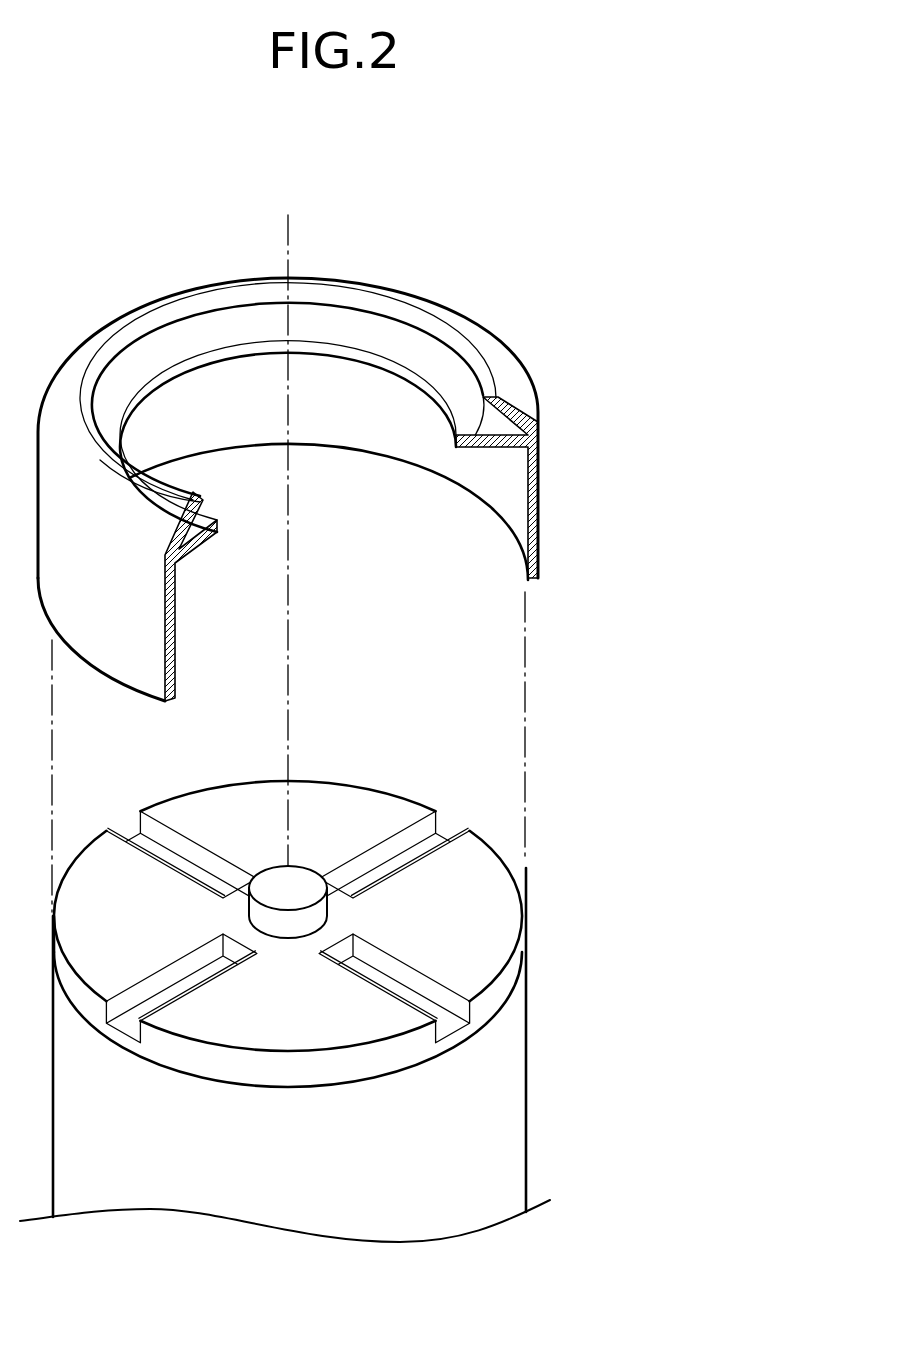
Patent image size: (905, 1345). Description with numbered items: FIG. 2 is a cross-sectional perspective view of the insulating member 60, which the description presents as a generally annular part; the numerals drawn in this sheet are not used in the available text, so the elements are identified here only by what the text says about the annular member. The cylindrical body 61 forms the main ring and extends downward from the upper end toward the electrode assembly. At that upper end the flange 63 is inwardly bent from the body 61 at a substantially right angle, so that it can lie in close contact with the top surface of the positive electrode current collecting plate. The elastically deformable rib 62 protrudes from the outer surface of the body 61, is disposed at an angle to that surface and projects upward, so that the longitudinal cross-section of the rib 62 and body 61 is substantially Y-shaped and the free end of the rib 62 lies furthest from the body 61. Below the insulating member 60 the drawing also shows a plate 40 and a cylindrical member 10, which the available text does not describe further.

The cylindrical body 10 is at (553, 1106).
The disk with radial grooves and central boss 40 is at (553, 902).
The cap 60 is at (333, 455).
The cylindrical wall of cap 61 is at (540, 540).
The inclined rim portion of cap 62 is at (443, 318).
The inward flange of cap 63 is at (537, 414).